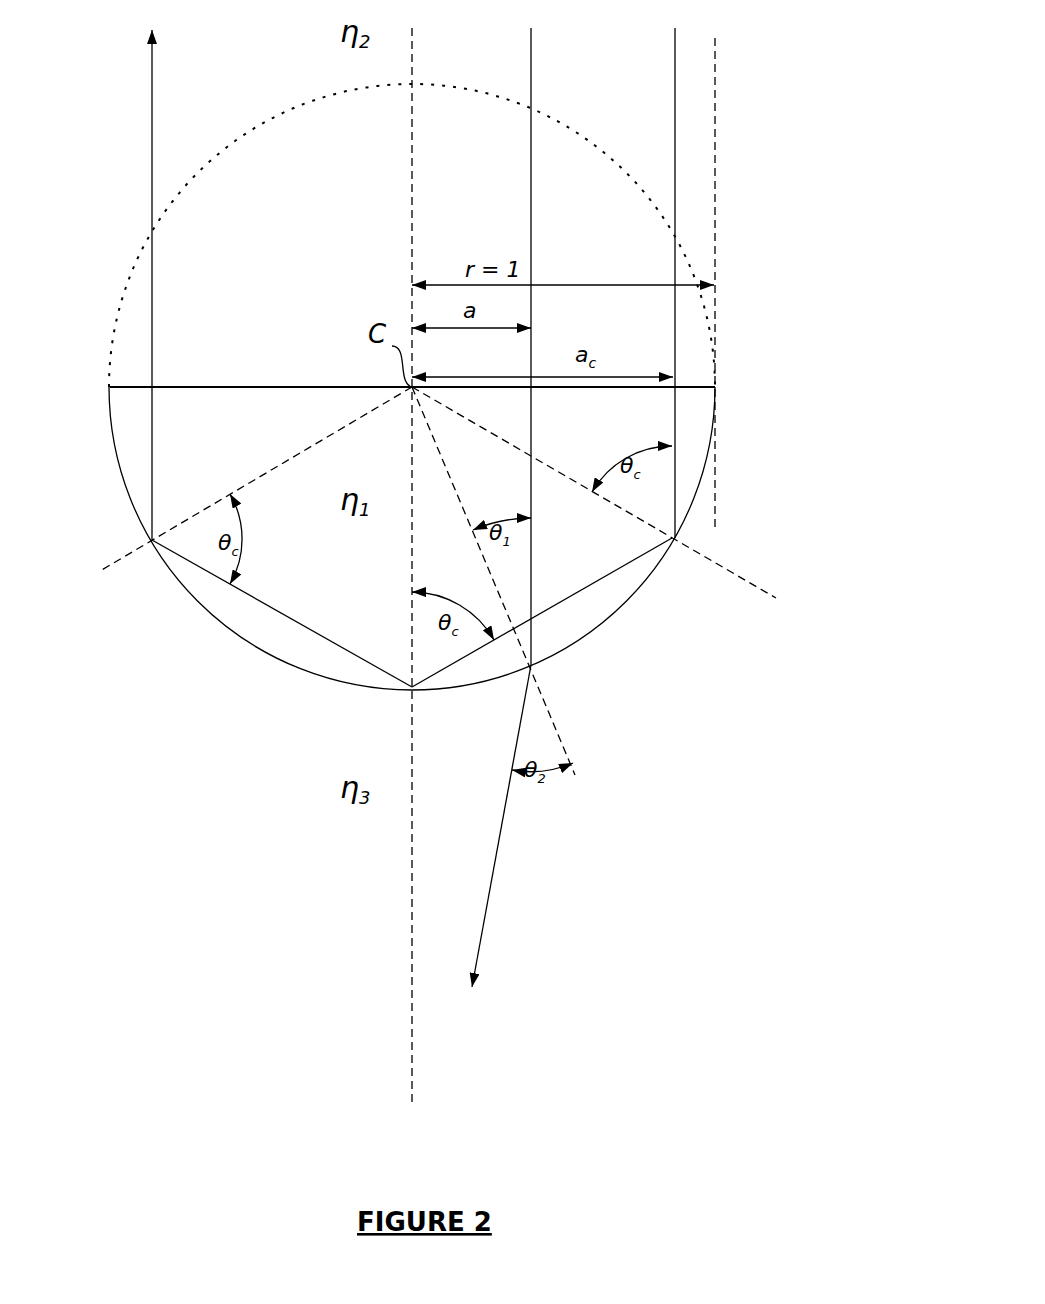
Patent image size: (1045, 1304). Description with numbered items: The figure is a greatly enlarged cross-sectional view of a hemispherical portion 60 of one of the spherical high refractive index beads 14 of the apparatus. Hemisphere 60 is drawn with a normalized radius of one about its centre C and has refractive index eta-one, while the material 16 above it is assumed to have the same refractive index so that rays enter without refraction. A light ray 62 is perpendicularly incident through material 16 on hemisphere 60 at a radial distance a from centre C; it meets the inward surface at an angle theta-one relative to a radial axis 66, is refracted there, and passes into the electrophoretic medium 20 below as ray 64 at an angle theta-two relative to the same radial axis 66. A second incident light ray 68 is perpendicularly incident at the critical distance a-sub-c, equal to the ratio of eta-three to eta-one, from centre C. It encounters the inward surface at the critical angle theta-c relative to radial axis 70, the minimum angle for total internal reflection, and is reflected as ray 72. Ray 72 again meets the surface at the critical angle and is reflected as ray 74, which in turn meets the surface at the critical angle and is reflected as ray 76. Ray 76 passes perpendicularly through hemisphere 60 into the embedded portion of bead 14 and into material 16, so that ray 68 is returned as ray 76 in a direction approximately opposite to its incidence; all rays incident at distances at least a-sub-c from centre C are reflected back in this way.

The spherical bead 14 is at (120, 332).
The material 16 is at (278, 38).
The electrophoretic medium 20 is at (290, 788).
The hemispherical portion 60 is at (263, 650).
The light ray 62 is at (531, 183).
The refracted ray 64 is at (500, 850).
The radial axis 66 is at (545, 708).
The incident light ray 68 is at (675, 93).
The radial axis 70 is at (758, 586).
The reflected ray 72 is at (575, 585).
The reflected ray 74 is at (300, 625).
The reflected ray 76 is at (152, 290).